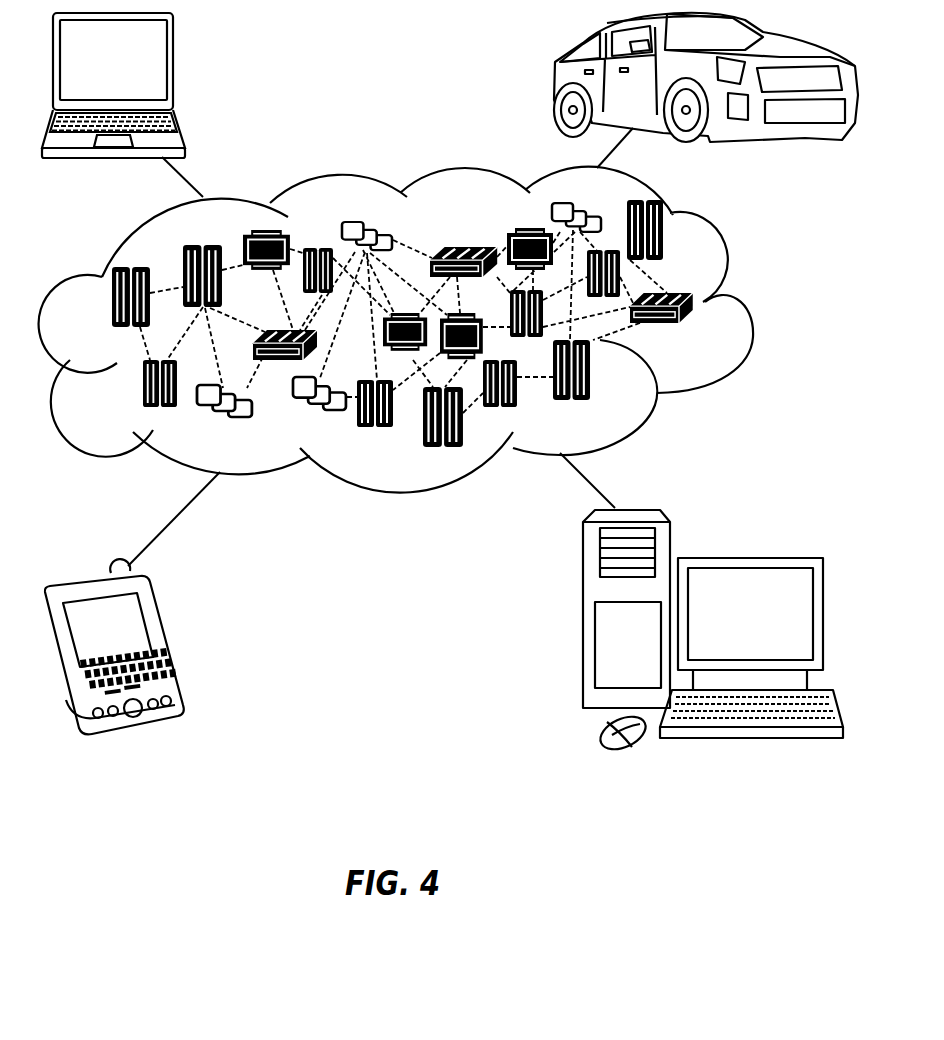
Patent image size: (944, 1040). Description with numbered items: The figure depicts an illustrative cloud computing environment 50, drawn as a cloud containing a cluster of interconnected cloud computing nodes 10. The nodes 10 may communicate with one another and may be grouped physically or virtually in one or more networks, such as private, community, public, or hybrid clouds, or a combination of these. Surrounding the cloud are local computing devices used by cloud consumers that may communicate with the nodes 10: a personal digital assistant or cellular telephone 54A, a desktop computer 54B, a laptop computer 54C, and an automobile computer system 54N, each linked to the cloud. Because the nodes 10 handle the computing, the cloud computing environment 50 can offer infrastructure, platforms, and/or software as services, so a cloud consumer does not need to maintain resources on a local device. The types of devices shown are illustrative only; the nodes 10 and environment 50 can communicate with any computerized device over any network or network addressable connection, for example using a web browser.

The cloud computing node 10 is at (698, 331).
The cloud computing environment 50 is at (752, 304).
The personal digital assistant or cellular telephone 54A is at (164, 640).
The desktop computer 54B is at (750, 558).
The laptop computer 54C is at (175, 65).
The automobile computer system 54N is at (557, 80).